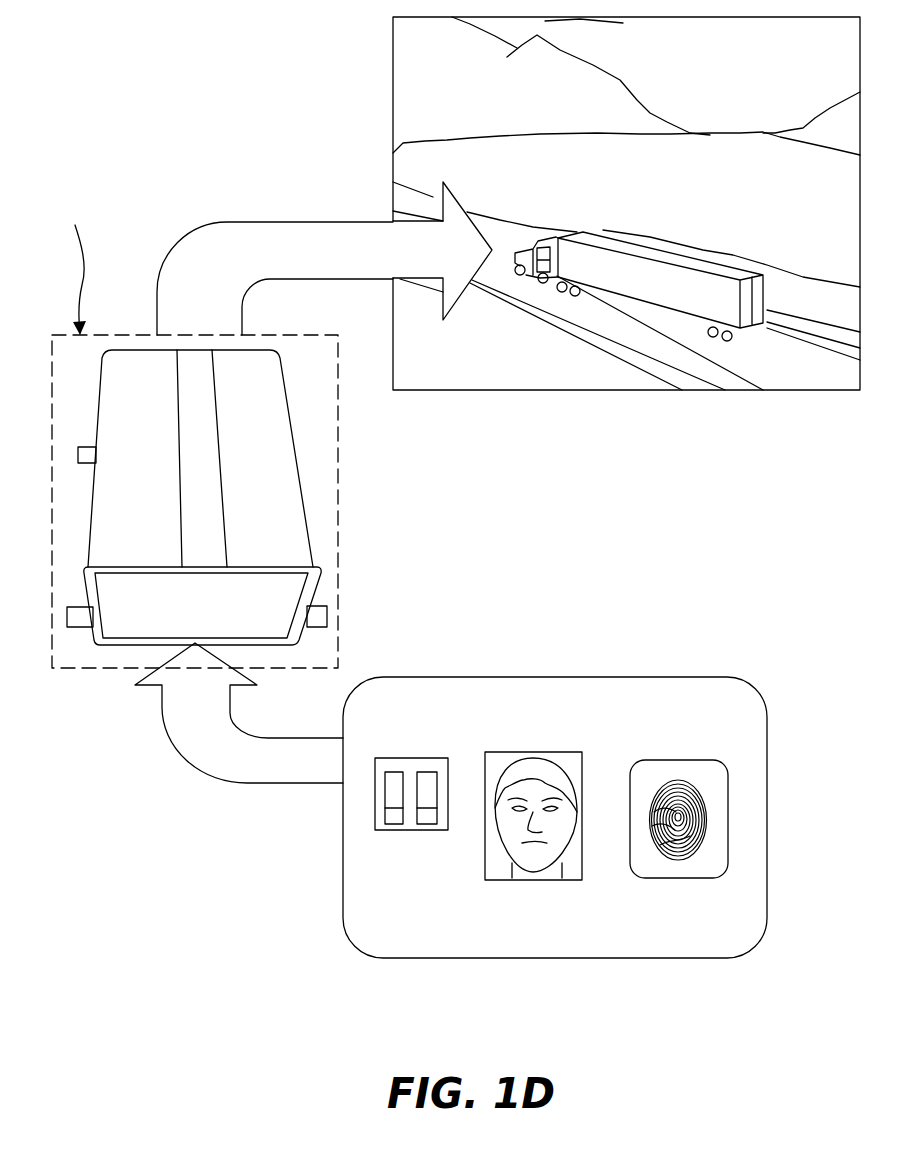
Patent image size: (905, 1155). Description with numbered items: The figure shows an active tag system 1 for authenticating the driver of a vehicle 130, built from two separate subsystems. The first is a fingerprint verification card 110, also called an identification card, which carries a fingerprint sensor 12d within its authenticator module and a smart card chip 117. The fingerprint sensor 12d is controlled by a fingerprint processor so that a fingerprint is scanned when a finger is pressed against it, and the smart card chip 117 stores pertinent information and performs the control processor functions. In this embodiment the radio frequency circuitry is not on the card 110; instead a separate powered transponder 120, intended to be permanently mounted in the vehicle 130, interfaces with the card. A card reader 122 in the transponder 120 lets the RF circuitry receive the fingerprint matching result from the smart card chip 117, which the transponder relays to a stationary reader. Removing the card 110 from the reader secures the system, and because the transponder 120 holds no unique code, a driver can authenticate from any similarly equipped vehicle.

The active tag system 1 is at (258, 93).
The transponder 120 is at (301, 447).
The card reader 122 is at (120, 630).
The vehicle 130 is at (557, 236).
The fingerprint verification card 110 is at (752, 663).
The smart card chip 117 is at (410, 765).
The fingerprint sensor 12d is at (722, 820).